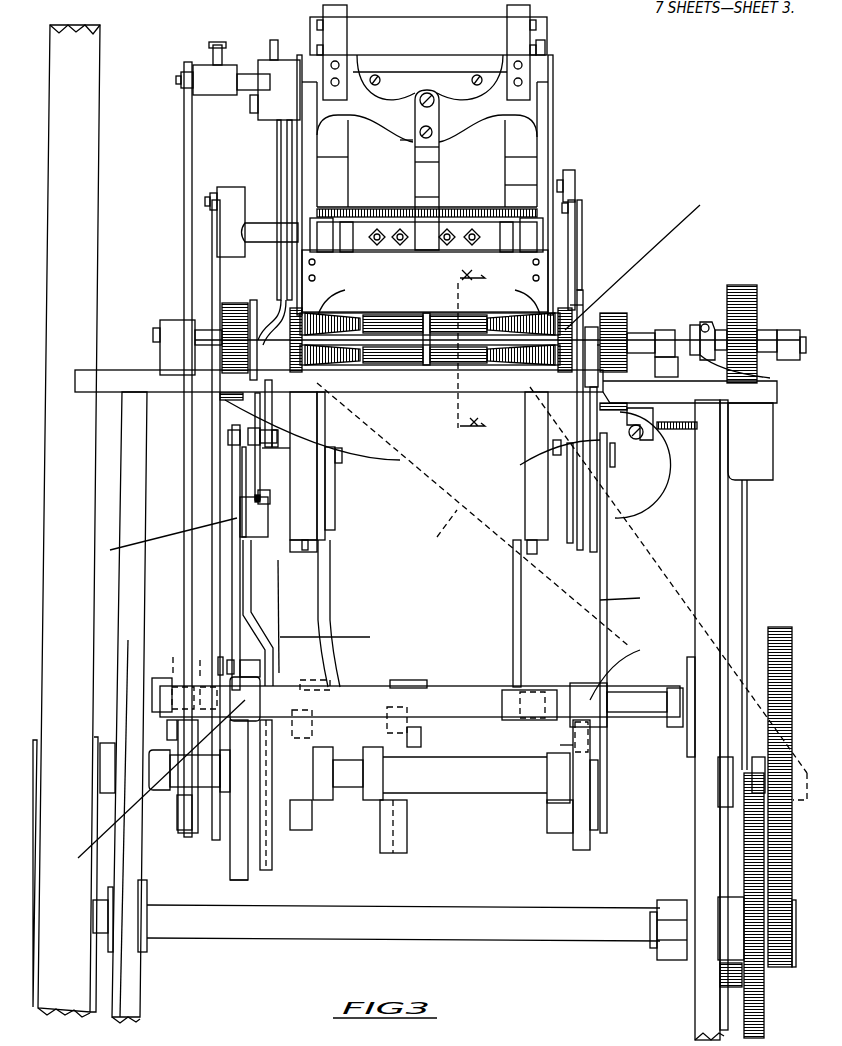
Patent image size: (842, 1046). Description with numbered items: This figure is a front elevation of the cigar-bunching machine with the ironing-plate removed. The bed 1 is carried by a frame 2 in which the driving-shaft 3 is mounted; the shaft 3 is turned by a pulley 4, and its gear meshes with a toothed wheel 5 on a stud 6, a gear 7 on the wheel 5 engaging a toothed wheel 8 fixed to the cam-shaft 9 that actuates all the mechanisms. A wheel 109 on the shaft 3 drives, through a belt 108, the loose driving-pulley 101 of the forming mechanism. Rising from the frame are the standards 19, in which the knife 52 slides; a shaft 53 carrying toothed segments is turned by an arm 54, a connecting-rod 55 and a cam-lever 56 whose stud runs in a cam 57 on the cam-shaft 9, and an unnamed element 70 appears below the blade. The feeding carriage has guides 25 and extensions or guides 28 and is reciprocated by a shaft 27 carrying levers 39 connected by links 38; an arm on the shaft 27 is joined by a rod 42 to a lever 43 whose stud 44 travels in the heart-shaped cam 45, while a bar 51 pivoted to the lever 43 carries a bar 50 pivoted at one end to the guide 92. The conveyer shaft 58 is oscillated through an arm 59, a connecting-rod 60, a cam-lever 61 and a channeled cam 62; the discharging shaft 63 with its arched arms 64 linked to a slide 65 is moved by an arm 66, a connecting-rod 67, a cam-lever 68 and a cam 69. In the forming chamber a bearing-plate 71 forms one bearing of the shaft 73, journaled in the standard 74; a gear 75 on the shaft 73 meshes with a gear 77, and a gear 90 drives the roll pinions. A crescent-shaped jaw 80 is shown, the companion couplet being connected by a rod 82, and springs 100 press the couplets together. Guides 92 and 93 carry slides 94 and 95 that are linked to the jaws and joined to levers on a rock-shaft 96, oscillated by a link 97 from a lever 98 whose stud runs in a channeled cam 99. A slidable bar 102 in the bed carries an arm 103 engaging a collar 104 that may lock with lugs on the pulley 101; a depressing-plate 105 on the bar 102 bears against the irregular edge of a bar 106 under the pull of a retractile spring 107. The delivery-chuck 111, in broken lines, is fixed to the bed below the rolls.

The bed 1 is at (108, 394).
The frame 2 is at (140, 518).
The driving-shaft 3 is at (517, 928).
The pulley 4 is at (35, 740).
The toothed wheel 5 is at (765, 1010).
The stud 6 is at (668, 928).
The gear 7 is at (787, 970).
The toothed wheel 8 is at (785, 625).
The cam-shaft 9 is at (500, 780).
The standards 19 is at (553, 135).
The guides 25 is at (305, 413).
The shaft 27 is at (225, 720).
The extensions or guides 28 is at (313, 553).
The links 38 is at (572, 195).
The levers 39 is at (578, 233).
The rod 42 is at (250, 610).
The lever 43 is at (264, 770).
The stud 44 is at (255, 745).
The heart-shaped cam 45 is at (242, 862).
The bar 50 is at (258, 497).
The bar 51 is at (267, 593).
The knife 52 is at (460, 30).
The shaft 53 is at (250, 104).
The arm 54 is at (280, 60).
The connecting-rod 55 is at (277, 145).
The cam-lever 56 is at (290, 680).
The cam 57 is at (312, 815).
The shaft 58 is at (270, 232).
The arm 59 is at (225, 218).
The connecting-rod 60 is at (212, 467).
The cam-lever 61 is at (223, 655).
The channeled cam 62 is at (210, 820).
The shaft 63 is at (255, 78).
The arched arms 64 is at (532, 25).
The slide 65 is at (463, 128).
The arm 66 is at (200, 72).
The connecting-rod 67 is at (184, 153).
The cam-lever 68 is at (168, 728).
The cam 69 is at (185, 828).
The bar 70 is at (426, 252).
The bearing-plate 71 is at (268, 300).
The shaft 73 is at (158, 338).
The standard 74 is at (180, 330).
The gear 75 is at (228, 318).
The gear 77 is at (230, 412).
The jaw 80 is at (645, 257).
The rod 82 is at (380, 340).
The gear 90 is at (340, 315).
The guide 92 is at (278, 490).
The guide 93 is at (604, 545).
The slide 94 is at (225, 522).
The slide 95 is at (545, 502).
The rock-shaft 96 is at (633, 712).
The link 97 is at (610, 745).
The lever 98 is at (590, 760).
The channeled cam 99 is at (553, 830).
The springs 100 is at (238, 320).
The loose driving-pulley 101 is at (757, 300).
The longitudinally-slidable bar 102 is at (660, 335).
The arm 103 is at (751, 372).
The collar 104 is at (700, 330).
The depressing-plate 105 is at (653, 440).
The bar 106 is at (640, 477).
The retractile spring 107 is at (697, 428).
The belt 108 is at (737, 547).
The wheel 109 is at (718, 975).
The delivery-chuck 111 is at (562, 591).